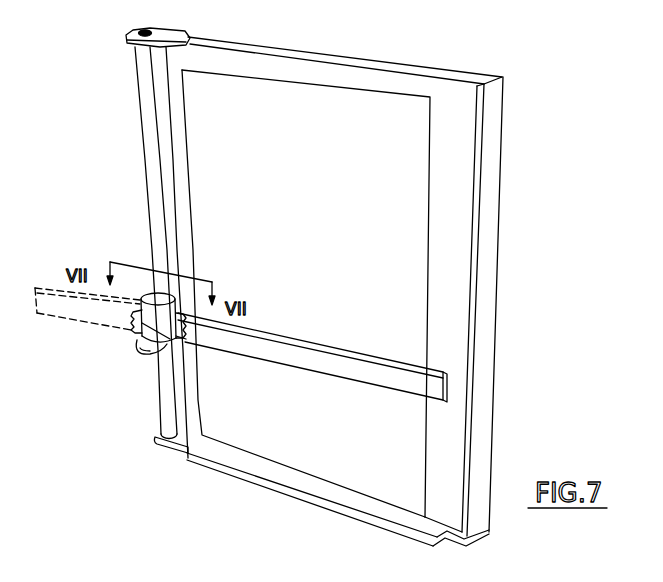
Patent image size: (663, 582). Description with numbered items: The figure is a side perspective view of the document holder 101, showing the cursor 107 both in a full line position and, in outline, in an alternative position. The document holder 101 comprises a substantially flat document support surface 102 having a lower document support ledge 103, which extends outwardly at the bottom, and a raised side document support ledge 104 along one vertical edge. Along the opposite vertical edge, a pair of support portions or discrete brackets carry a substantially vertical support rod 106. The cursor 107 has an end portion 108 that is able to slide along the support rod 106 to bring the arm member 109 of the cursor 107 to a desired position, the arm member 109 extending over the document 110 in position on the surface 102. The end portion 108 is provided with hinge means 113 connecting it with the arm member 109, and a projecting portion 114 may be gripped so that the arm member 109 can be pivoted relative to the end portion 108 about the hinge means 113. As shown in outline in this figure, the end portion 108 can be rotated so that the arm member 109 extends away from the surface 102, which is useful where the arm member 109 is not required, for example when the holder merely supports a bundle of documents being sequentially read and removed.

The document holder 101 is at (497, 70).
The document support surface 102 is at (441, 85).
The lower document support ledge 103 is at (390, 517).
The side document support ledge 104 is at (492, 176).
The support rod 106 is at (147, 175).
The cursor 107 is at (295, 375).
The end portion 108 is at (136, 335).
The arm member 109 is at (372, 377).
The document 110 is at (403, 287).
The hinge means 113 is at (188, 338).
The projecting portion 114 is at (148, 360).